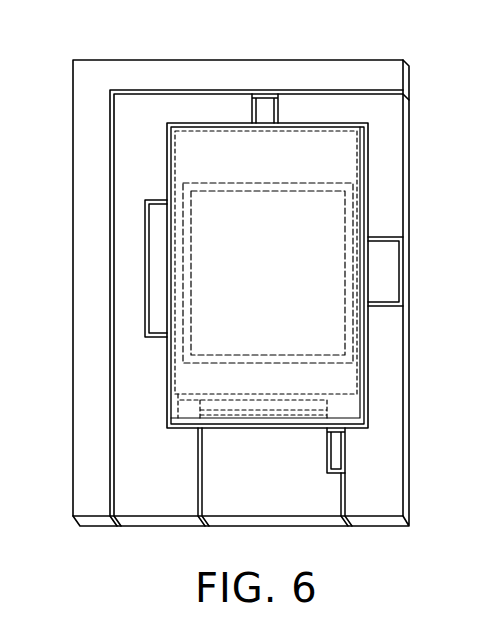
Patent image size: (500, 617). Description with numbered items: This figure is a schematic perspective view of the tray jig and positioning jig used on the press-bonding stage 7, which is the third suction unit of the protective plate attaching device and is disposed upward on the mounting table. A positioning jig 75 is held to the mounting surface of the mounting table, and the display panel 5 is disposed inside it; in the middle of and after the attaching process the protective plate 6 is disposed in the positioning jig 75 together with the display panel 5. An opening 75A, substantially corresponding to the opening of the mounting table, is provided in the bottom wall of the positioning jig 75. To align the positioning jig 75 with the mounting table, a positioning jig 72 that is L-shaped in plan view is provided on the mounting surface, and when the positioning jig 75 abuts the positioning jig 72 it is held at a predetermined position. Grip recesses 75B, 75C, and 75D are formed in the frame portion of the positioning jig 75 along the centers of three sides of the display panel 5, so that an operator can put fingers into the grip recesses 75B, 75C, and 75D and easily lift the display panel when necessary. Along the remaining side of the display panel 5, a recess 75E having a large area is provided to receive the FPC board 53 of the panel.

The positioning jig 72 is at (86, 89).
The positioning jig 75 is at (128, 125).
The protective plate 6 is at (190, 168).
The display panel 5 is at (176, 236).
The press-bonding stage 7 is at (217, 340).
The opening 75A is at (217, 370).
The grip recess 75B is at (267, 110).
The grip recess 75C is at (160, 287).
The grip recess 75D is at (393, 270).
The recess 75E is at (335, 458).
The FPC board 53 is at (230, 458).